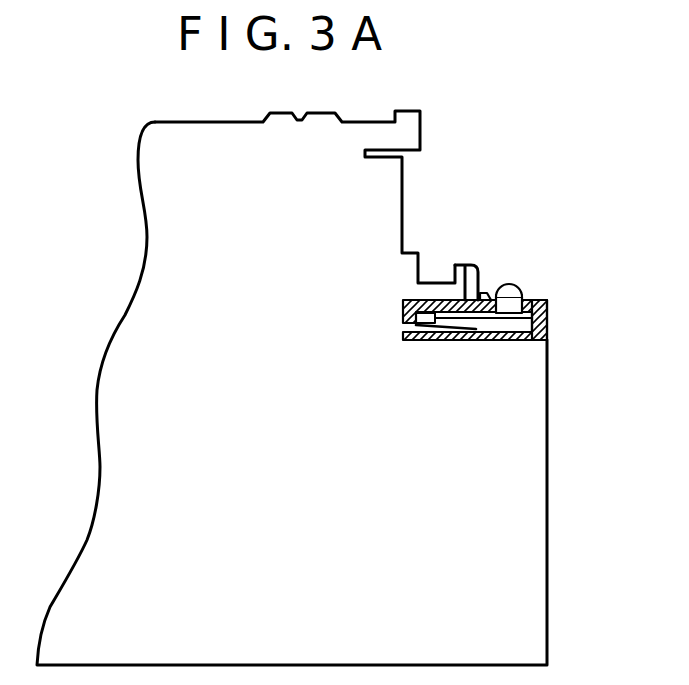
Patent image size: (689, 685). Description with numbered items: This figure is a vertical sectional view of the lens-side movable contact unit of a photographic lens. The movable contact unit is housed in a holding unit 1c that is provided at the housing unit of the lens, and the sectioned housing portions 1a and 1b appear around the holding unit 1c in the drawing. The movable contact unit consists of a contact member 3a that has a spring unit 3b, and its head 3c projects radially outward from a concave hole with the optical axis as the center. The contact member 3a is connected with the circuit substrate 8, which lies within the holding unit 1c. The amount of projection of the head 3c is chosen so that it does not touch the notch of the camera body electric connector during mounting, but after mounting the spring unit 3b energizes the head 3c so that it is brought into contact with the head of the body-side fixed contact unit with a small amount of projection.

The projection 1a is at (472, 264).
The side wall 1b is at (548, 318).
The holding unit 1c is at (515, 320).
The contact member 3a is at (522, 287).
The spring unit 3b is at (430, 300).
The head 3c is at (508, 284).
The circuit substrate 8 is at (474, 330).